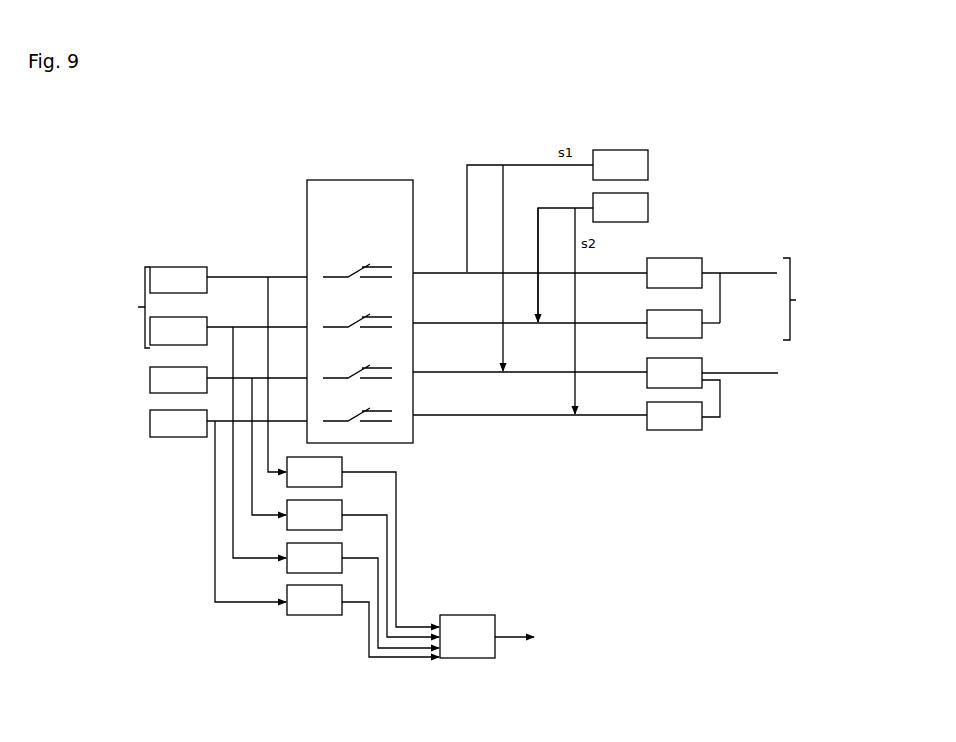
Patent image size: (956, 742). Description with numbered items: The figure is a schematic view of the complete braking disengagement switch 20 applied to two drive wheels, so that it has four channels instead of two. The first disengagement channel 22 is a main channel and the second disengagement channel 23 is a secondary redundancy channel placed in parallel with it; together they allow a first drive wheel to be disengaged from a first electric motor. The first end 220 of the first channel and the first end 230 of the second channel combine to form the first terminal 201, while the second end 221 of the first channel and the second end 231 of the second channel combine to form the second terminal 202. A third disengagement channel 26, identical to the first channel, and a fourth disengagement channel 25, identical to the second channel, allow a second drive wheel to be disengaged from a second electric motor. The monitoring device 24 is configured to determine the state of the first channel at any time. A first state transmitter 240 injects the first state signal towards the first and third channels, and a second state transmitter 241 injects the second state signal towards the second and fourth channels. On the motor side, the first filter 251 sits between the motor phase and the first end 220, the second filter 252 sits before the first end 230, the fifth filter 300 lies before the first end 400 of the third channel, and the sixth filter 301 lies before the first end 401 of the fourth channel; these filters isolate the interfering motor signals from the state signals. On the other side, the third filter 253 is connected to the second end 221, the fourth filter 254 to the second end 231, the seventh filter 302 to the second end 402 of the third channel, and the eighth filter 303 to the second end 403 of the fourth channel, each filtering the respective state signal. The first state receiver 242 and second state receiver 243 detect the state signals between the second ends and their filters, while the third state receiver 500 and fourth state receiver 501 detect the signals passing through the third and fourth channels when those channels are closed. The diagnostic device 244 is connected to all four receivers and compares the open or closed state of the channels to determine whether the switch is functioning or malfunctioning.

The braking disengagement switch 20 is at (360, 274).
The first disengagement channel 22 is at (318, 187).
The second disengagement channel 23 is at (273, 272).
The second end of the first disengagement channel 221 is at (254, 215).
The third disengagement channel 26 is at (404, 243).
The first end of the first disengagement channel 220 is at (442, 211).
The first end of the second disengagement channel 230 is at (485, 198).
The first state transmitter 240 is at (568, 233).
The second state transmitter 241 is at (609, 278).
The first filter 251 is at (712, 258).
The second filter 252 is at (744, 341).
The fifth filter 300 is at (744, 392).
The sixth filter 301 is at (744, 432).
The first terminal 201 is at (826, 289).
The first end of the third disengagement channel 400 is at (573, 415).
The first end of the fourth disengagement channel 401 is at (574, 457).
The fourth disengagement channel 25 is at (585, 515).
The third filter 253 is at (161, 249).
The fourth filter 254 is at (140, 338).
The second terminal 202 is at (105, 300).
The second end of the second disengagement channel 231 is at (191, 356).
The seventh filter 302 is at (139, 394).
The eighth filter 303 is at (139, 438).
The second end of the third disengagement channel 402 is at (219, 433).
The second end of the fourth disengagement channel 403 is at (219, 472).
The monitoring device 24 is at (275, 486).
The first state receiver 242 is at (355, 576).
The third state receiver 500 is at (226, 559).
The second state receiver 243 is at (229, 610).
The fourth state receiver 501 is at (256, 640).
The diagnostic device 244 is at (537, 653).